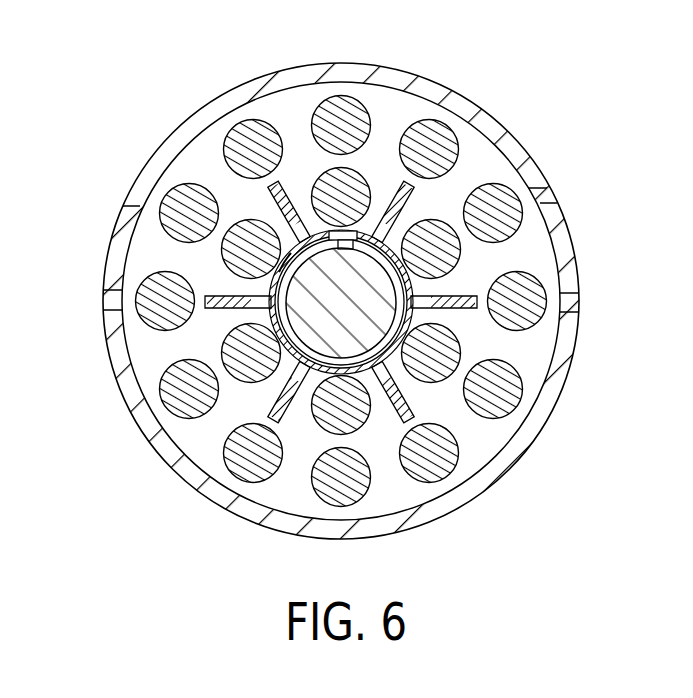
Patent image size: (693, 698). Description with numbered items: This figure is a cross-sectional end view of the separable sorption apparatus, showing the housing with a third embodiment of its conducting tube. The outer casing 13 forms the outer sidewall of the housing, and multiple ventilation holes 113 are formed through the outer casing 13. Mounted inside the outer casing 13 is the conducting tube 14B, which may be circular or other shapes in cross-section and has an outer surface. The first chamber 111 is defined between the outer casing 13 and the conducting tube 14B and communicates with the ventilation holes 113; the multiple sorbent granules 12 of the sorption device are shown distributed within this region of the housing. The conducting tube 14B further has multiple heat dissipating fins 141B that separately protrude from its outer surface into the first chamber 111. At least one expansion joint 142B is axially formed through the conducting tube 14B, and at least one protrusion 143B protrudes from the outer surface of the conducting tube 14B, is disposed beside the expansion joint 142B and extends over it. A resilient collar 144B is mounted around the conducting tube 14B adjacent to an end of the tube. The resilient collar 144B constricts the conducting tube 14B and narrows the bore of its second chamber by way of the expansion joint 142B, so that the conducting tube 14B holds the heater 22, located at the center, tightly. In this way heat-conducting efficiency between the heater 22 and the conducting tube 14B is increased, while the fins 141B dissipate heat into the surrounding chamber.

The outer casing 13 is at (287, 80).
The first chamber 111 is at (200, 163).
The ventilation holes 113 is at (135, 202).
The sorbent granules 12 is at (433, 138).
The heat dissipating fins 141B is at (395, 397).
The conducting tube 14B is at (405, 330).
The resilient collar 144B is at (275, 272).
The protrusion 143B is at (355, 229).
The expansion joint 142B is at (343, 247).
The heater 22 is at (318, 318).